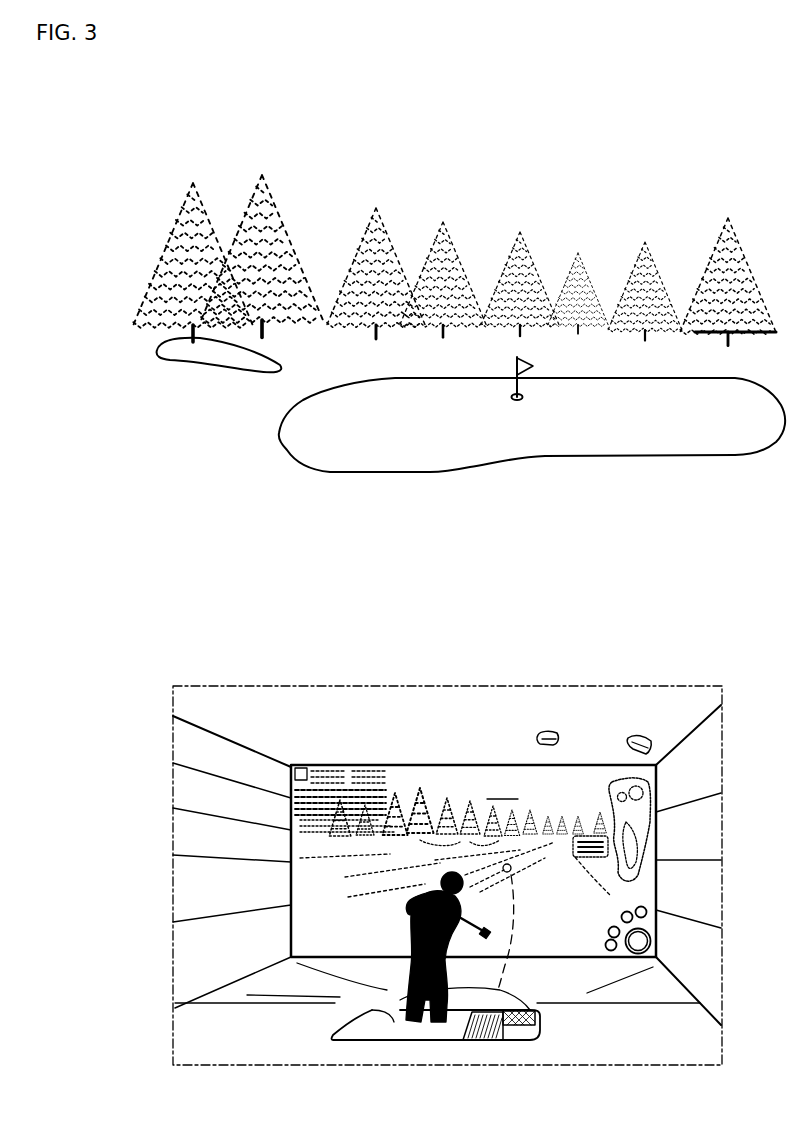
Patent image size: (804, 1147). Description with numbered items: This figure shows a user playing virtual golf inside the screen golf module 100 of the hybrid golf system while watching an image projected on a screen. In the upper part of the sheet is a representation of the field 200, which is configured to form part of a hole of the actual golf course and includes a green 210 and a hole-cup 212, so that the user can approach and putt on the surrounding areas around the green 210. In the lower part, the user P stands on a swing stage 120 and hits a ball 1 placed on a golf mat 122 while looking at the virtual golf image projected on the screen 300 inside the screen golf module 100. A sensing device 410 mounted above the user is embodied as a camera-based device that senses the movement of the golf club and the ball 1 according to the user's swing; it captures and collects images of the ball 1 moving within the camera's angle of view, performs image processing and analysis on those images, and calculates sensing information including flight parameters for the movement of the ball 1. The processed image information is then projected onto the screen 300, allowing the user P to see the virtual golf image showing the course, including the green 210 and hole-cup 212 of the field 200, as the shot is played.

The field 200 is at (258, 523).
The green 210 is at (640, 446).
The hole-cup 212 is at (523, 397).
The screen golf module 100 is at (303, 723).
The screen 300 is at (285, 878).
The sensing device 410 is at (630, 740).
The player P is at (407, 908).
The ball 1 is at (510, 870).
The swing stage 120 is at (370, 1012).
The golf mat 122 is at (536, 1018).